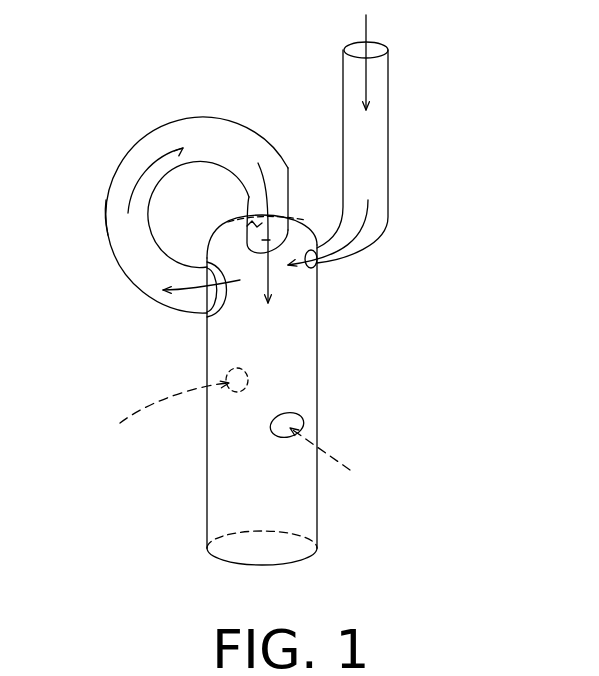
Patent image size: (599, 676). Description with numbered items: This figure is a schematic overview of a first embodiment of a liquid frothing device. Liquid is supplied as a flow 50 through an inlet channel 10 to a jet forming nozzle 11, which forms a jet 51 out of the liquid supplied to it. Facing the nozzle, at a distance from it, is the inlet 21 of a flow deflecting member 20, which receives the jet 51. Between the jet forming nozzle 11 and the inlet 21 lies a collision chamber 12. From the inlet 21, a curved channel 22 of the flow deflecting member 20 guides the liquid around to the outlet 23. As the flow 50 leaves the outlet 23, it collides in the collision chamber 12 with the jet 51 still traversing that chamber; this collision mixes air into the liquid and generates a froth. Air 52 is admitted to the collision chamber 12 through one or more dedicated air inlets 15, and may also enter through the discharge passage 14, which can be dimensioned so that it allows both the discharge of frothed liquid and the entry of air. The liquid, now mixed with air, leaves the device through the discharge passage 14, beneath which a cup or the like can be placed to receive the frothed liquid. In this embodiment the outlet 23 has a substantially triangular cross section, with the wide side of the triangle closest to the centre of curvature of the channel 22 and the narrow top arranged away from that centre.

The inlet channel 10 is at (387, 155).
The jet forming nozzle 11 is at (317, 240).
The collision chamber 12 is at (250, 308).
The discharge passage 14 is at (300, 508).
The air inlets 15 is at (230, 390).
The flow deflecting member 20 is at (167, 100).
The inlet 21 is at (203, 306).
The channel 22 is at (110, 250).
The outlet 23 is at (266, 238).
The flow 50 is at (372, 33).
The jet 51 is at (320, 268).
The air 52 is at (140, 407).